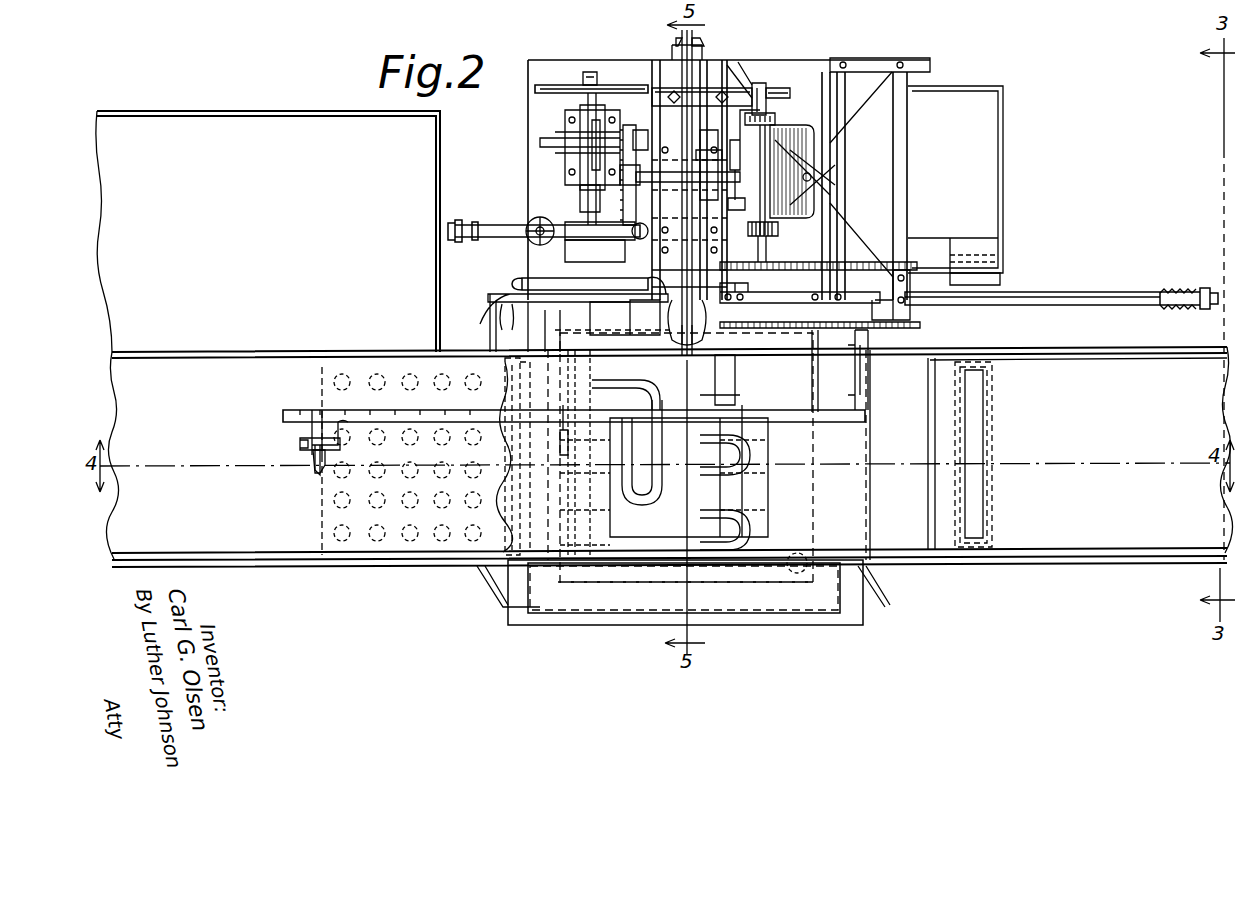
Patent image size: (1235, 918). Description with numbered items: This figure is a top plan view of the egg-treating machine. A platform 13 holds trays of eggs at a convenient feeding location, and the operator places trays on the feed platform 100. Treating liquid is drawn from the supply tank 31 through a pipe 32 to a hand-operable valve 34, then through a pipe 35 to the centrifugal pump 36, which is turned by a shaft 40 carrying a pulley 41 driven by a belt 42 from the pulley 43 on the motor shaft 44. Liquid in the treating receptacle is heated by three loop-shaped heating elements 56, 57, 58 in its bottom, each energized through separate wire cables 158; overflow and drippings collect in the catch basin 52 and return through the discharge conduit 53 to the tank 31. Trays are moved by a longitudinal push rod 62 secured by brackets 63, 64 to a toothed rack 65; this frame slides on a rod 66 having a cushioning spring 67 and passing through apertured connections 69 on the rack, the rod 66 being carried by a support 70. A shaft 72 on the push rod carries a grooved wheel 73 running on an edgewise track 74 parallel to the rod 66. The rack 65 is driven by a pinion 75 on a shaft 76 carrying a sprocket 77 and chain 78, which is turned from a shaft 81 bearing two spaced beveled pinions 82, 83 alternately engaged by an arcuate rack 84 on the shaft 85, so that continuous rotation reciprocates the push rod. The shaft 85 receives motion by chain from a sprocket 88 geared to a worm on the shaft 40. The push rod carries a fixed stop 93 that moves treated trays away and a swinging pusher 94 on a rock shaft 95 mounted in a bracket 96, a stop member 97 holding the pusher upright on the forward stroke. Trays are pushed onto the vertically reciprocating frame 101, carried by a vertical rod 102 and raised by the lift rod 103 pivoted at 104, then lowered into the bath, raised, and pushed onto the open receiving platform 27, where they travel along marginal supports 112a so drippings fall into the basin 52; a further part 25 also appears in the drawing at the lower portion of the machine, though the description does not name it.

The platform 13 is at (248, 262).
The bottom tank 25 is at (955, 322).
The receiving platform 27 is at (732, 457).
The supply tank 31 is at (753, 179).
The pipe 32 is at (486, 226).
The hand-operable valve 34 is at (528, 215).
The pipe 35 is at (575, 225).
The centrifugal pump 36 is at (596, 258).
The shaft 40 is at (590, 72).
The pulley 41 is at (612, 92).
The belt 42 is at (575, 90).
The pulley 43 is at (782, 88).
The shaft 44 is at (762, 88).
The catch basin 52 is at (998, 445).
The discharge conduit 53 is at (990, 285).
The heating element 56 is at (662, 455).
The heating element 57 is at (750, 455).
The heating element 58 is at (745, 508).
The push rod 62 is at (425, 422).
The bracket 63 is at (870, 382).
The bracket 64 is at (718, 397).
The toothed rack 65 is at (812, 371).
The rod 66 is at (1110, 306).
The cushioning spring 67 is at (1182, 310).
The apertured connections 69 is at (878, 305).
The support 70 is at (1145, 283).
The shaft 72 is at (503, 394).
The grooved wheel 73 is at (545, 345).
The track 74 is at (600, 380).
The pinion 75 is at (800, 130).
The shaft 76 is at (955, 179).
The sprocket 77 is at (890, 262).
The chain 78 is at (802, 274).
The shaft 81 is at (755, 198).
The beveled pinion 82 is at (771, 170).
The beveled pinion 83 is at (770, 230).
The arcuate rack 84 is at (740, 142).
The shaft 85 is at (655, 170).
The sprocket 88 is at (636, 130).
The fixed stop 93 is at (570, 450).
The swinging pusher 94 is at (330, 462).
The shaft 95 is at (325, 425).
The bracket 96 is at (340, 445).
The stop member 97 is at (314, 425).
The platform 100 is at (232, 366).
The vertically reciprocating frame 101 is at (696, 463).
The vertical rod 102 is at (678, 362).
The lift rod 103 is at (680, 58).
The pivot connection 104 is at (703, 42).
The marginal supports 112a is at (1112, 354).
The wire cables 158 is at (498, 326).